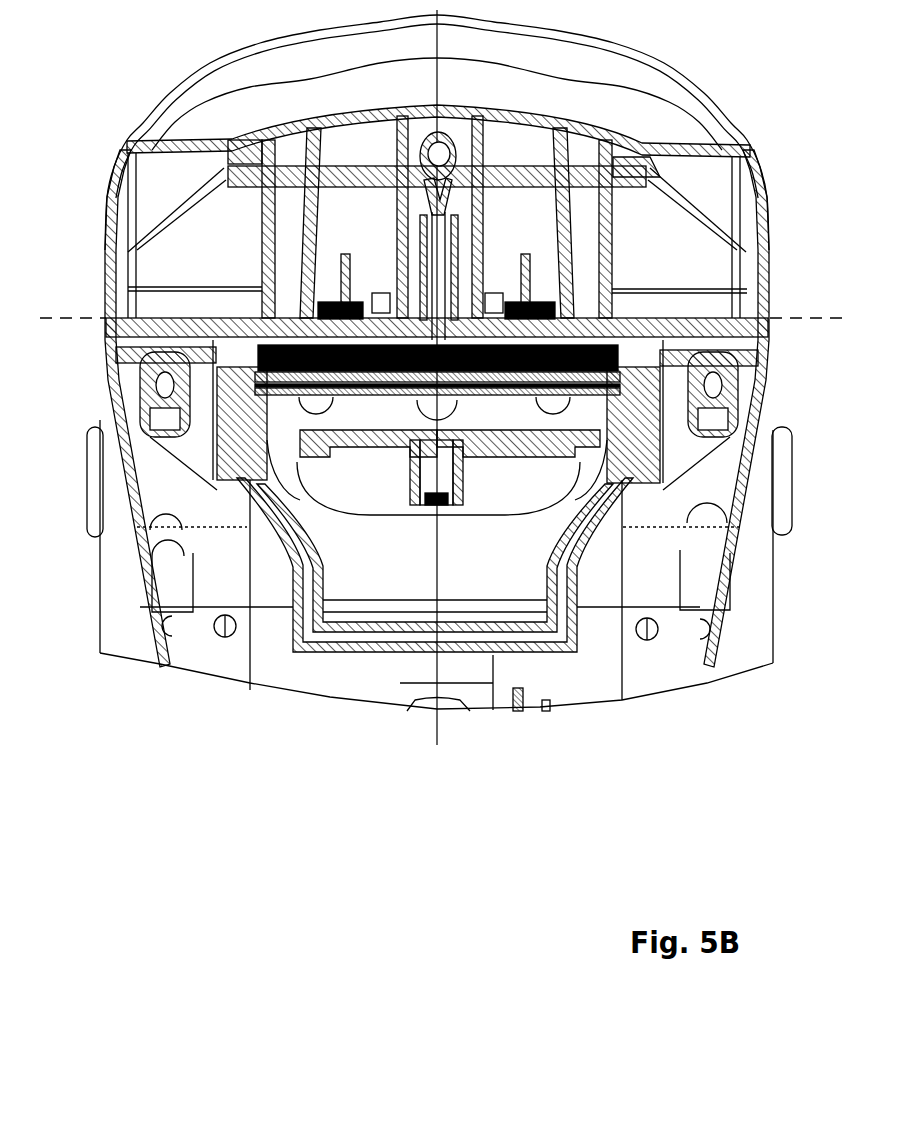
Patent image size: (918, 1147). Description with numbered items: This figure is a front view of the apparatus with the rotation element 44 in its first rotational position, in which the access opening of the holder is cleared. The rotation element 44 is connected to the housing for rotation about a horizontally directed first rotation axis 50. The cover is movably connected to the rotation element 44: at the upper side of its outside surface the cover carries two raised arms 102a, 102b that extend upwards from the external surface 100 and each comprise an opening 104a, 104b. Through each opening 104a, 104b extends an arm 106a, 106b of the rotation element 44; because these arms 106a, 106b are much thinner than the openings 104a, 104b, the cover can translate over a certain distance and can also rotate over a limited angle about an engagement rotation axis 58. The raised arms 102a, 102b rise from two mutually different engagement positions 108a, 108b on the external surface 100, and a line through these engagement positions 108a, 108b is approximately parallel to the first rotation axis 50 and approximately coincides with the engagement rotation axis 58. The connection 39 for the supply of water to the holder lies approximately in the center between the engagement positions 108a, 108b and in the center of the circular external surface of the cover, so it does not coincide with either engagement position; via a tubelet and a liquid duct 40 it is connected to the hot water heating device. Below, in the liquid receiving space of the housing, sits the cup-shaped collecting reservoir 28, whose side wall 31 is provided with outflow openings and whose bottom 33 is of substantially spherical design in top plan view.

The collecting reservoir 28 is at (345, 597).
The side wall 31 is at (167, 533).
The bottom 33 is at (418, 628).
The connection 39 is at (760, 347).
The liquid duct 40 is at (462, 152).
The rotation element 44 is at (657, 110).
The first rotation axis 50 is at (476, 282).
The engagement rotation axis 58 is at (815, 318).
The external surface 100 is at (160, 335).
The raised arm 102a is at (352, 300).
The raised arm 102b is at (520, 298).
The opening 104a is at (300, 277).
The opening 104b is at (582, 275).
The arm 106a is at (262, 288).
The arm 106b is at (620, 290).
The engagement position 108a is at (368, 431).
The engagement position 108b is at (518, 431).